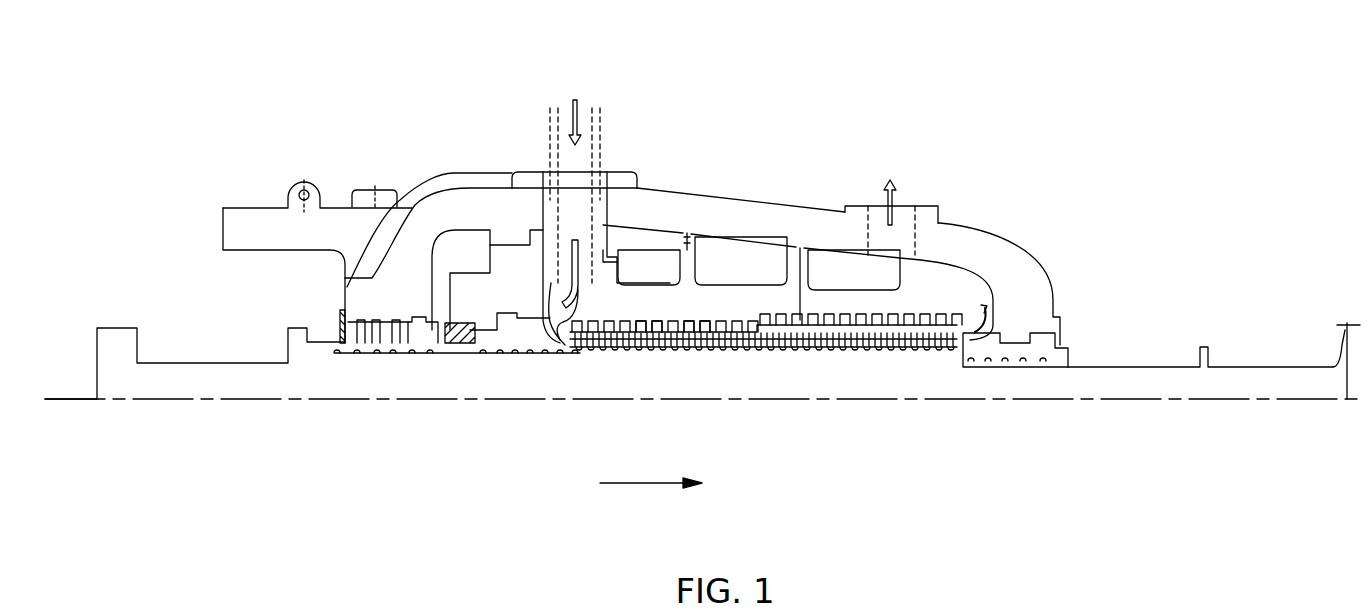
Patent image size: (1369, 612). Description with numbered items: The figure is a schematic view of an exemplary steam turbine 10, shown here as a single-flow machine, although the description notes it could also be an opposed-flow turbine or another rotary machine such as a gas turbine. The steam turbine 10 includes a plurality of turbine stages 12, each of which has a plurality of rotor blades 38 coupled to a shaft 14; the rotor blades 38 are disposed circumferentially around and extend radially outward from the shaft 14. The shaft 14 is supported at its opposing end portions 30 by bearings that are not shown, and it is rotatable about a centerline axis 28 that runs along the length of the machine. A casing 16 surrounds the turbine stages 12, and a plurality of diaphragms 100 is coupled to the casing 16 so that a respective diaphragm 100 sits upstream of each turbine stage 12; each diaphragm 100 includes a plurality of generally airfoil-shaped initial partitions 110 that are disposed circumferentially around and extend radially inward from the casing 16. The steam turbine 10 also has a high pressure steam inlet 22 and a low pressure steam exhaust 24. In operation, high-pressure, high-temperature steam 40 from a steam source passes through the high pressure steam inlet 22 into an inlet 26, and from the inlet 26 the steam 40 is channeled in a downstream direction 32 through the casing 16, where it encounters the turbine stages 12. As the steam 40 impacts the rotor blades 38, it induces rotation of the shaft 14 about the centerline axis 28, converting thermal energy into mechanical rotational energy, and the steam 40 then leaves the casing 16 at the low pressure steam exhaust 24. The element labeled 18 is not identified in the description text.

The steam turbine 10 is at (922, 57).
The turbine stages 12 is at (766, 380).
The shaft 14 is at (1248, 357).
The casing 16 is at (1027, 240).
The duct 18 is at (1048, 280).
The high pressure steam inlet 22 is at (610, 128).
The low pressure steam exhaust 24 is at (912, 200).
The inlet 26 is at (558, 357).
The centerline axis 28 is at (1040, 342).
The opposing end portions 30 is at (165, 363).
The downstream direction 32 is at (648, 483).
The rotor blades 38 is at (732, 355).
The steam 40 is at (577, 102).
The diaphragms 100 is at (648, 318).
The initial partitions 110 is at (700, 318).